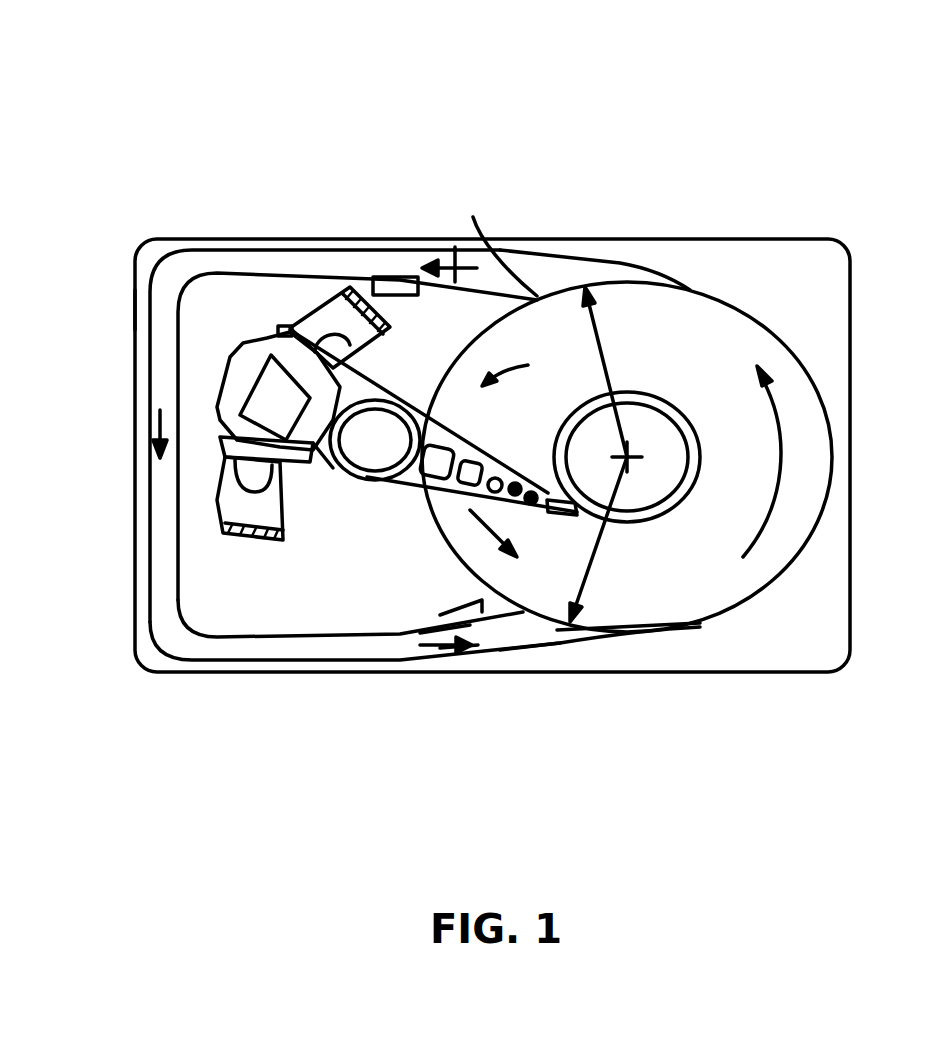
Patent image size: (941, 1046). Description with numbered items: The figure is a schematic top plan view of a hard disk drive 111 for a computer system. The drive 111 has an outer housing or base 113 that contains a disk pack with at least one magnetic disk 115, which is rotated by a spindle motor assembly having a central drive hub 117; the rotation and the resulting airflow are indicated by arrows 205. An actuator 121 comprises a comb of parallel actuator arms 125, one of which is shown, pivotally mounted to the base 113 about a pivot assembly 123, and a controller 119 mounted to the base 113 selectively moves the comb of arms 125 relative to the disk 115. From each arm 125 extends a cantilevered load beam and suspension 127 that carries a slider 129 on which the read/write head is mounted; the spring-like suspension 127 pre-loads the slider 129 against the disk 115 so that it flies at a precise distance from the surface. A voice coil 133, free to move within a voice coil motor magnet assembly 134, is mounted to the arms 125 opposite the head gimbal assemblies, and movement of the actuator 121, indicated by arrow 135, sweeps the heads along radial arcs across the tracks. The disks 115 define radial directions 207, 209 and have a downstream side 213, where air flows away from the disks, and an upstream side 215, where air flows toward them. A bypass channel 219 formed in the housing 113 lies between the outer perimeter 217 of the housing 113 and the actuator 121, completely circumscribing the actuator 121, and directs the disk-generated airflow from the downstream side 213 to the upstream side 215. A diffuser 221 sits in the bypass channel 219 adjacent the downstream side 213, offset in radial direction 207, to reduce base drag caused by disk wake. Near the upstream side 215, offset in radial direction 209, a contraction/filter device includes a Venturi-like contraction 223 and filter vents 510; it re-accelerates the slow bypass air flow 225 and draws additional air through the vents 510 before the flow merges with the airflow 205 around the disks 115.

The hard disk drive 111 is at (810, 140).
The housing or base 113 is at (702, 237).
The magnetic disk 115 is at (712, 308).
The central drive hub 117 is at (660, 390).
The controller 119 is at (397, 295).
The actuator 121 is at (393, 452).
The pivot assembly 123 is at (360, 480).
The actuator arm 125 is at (437, 427).
The load beam and suspension 127 is at (480, 453).
The slider 129 is at (537, 513).
The voice coil 133 is at (245, 350).
The voice coil motor magnet assembly 134 is at (333, 315).
The actuator movement arrow 135 is at (453, 510).
The disk rotation arrows 205 is at (772, 418).
The radial direction 207 is at (607, 348).
The radial direction 209 is at (590, 568).
The downstream side 213 is at (492, 246).
The upstream side 215 is at (557, 630).
The outer perimeter 217 is at (128, 327).
The bypass channel 219 is at (400, 268).
The diffuser 221 is at (533, 252).
The contraction 223 is at (477, 647).
The slow bypass air flow 225 is at (490, 640).
The filter vents 510 is at (527, 647).